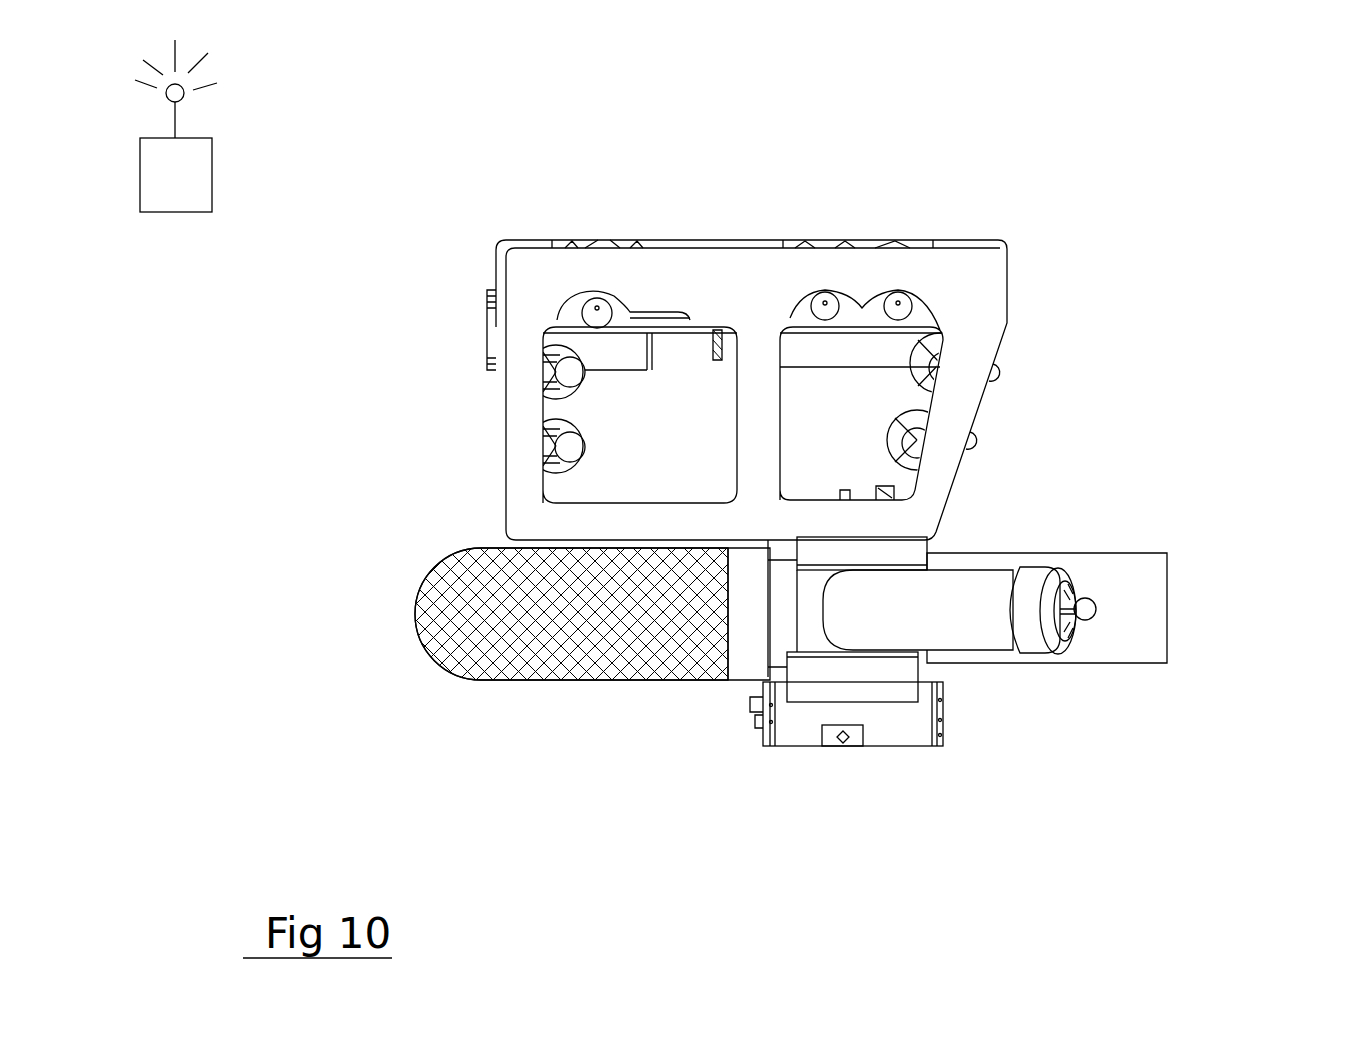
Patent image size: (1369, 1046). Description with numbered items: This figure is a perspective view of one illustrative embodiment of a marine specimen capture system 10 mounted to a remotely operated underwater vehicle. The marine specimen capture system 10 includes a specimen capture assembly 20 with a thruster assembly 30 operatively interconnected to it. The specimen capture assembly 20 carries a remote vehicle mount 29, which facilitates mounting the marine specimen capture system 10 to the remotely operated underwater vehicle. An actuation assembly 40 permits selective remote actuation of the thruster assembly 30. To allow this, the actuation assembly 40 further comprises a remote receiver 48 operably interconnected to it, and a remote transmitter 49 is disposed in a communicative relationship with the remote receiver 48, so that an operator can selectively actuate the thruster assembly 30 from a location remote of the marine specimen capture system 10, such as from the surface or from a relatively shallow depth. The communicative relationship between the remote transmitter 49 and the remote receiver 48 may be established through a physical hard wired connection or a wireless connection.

The marine specimen capture system 10 is at (1196, 456).
The specimen capture assembly 20 is at (1180, 560).
The remote vehicle mount 29 is at (930, 545).
The thruster assembly 30 is at (1053, 675).
The actuation assembly 40 is at (940, 772).
The remote receiver 48 is at (830, 746).
The remote transmitter 49 is at (180, 212).